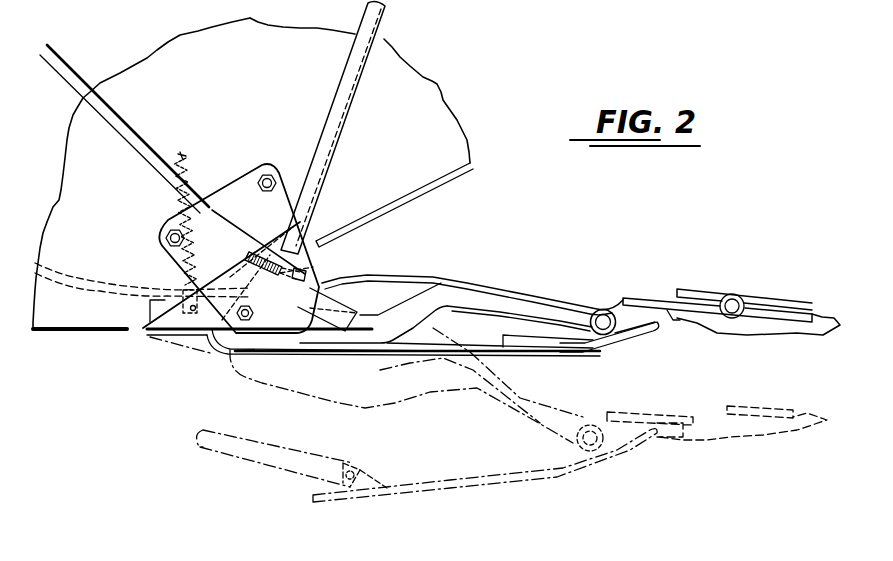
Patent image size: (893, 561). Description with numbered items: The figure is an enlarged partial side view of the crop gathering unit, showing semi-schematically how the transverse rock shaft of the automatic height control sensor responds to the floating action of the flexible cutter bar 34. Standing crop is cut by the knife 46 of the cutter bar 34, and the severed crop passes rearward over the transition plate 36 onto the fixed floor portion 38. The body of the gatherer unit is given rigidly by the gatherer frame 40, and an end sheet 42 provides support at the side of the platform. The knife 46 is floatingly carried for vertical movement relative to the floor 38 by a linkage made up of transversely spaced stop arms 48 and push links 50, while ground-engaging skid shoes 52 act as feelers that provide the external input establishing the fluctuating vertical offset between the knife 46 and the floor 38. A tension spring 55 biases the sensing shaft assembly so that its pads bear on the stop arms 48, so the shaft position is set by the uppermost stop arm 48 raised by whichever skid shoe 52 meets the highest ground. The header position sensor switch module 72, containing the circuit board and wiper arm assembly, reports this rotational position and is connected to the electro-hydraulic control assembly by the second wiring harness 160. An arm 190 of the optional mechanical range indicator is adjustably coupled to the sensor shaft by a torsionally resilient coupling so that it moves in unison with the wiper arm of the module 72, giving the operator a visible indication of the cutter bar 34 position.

The floating flexible cutter bar 34 is at (683, 458).
The transition plate 36 is at (433, 277).
The fixed floor portion 38 is at (90, 255).
The gatherer frame 40 is at (58, 335).
The end sheet 42 is at (273, 74).
The knife 46 is at (670, 283).
The stop arm 48 is at (400, 402).
The push link 50 is at (237, 457).
The skid shoe 52 is at (480, 483).
The tension spring 55 is at (173, 190).
The header position sensor switch module 72 is at (239, 168).
The second wiring harness 160 is at (131, 112).
The arm 190 is at (388, 29).